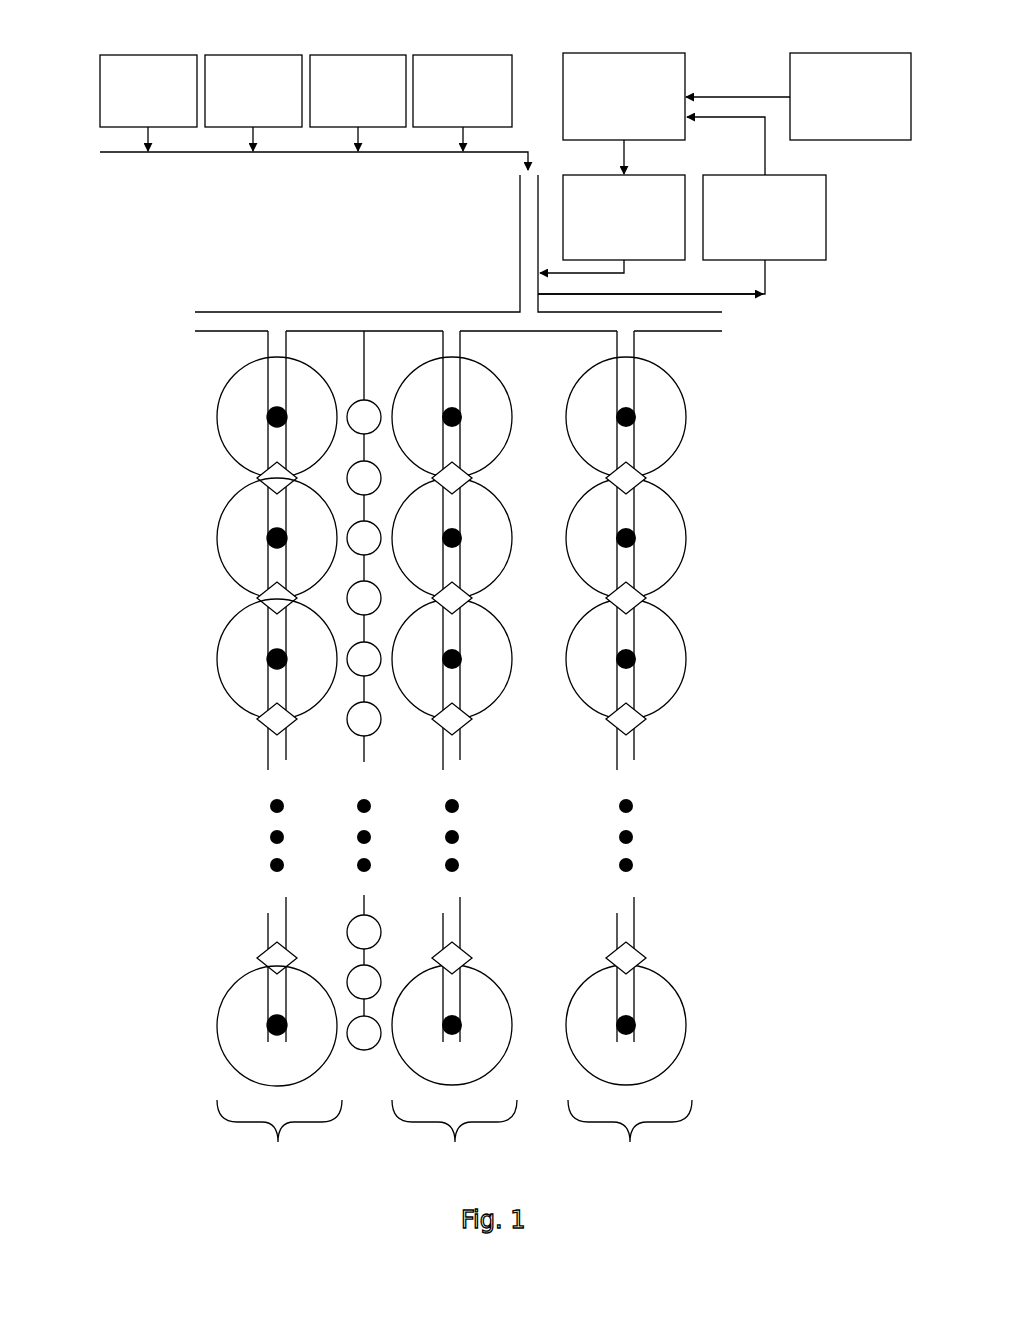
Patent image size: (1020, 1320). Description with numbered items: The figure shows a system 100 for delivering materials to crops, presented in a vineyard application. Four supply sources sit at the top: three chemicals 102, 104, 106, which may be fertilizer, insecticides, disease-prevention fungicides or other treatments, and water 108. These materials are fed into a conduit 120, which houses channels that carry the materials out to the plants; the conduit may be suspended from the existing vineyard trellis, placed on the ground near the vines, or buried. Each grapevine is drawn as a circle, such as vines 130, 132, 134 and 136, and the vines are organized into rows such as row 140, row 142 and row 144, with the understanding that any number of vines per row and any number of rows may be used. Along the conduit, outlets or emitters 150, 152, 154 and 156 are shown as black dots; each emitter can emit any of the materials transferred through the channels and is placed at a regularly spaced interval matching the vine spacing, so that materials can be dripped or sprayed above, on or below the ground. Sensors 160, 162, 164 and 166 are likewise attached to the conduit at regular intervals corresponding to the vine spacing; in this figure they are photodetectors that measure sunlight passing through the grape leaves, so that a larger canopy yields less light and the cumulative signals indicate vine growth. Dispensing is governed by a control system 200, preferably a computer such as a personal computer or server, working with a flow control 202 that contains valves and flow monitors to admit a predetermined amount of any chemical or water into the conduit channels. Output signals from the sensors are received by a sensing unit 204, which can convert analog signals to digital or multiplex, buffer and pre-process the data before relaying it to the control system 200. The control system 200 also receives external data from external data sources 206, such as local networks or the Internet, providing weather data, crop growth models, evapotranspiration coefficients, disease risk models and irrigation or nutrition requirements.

The system 100 is at (108, 15).
The chemical 102 is at (125, 55).
The chemical 104 is at (230, 55).
The chemical 106 is at (335, 55).
The water 108 is at (440, 55).
The conduit 120 is at (478, 310).
The vine 130 is at (216, 412).
The vine 132 is at (216, 533).
The vine 134 is at (216, 652).
The vine 136 is at (218, 1010).
The row 140 is at (279, 1137).
The row 142 is at (454, 1137).
The row 144 is at (630, 1135).
The emitter 150 is at (286, 416).
The emitter 152 is at (286, 537).
The emitter 154 is at (286, 658).
The emitter 156 is at (286, 1021).
The sensor 160 is at (257, 478).
The sensor 162 is at (257, 598).
The sensor 164 is at (257, 719).
The sensor 166 is at (257, 958).
The control system 200 is at (598, 53).
The flow control 202 is at (642, 175).
The sensing unit 204 is at (803, 175).
The external data sources 206 is at (825, 53).